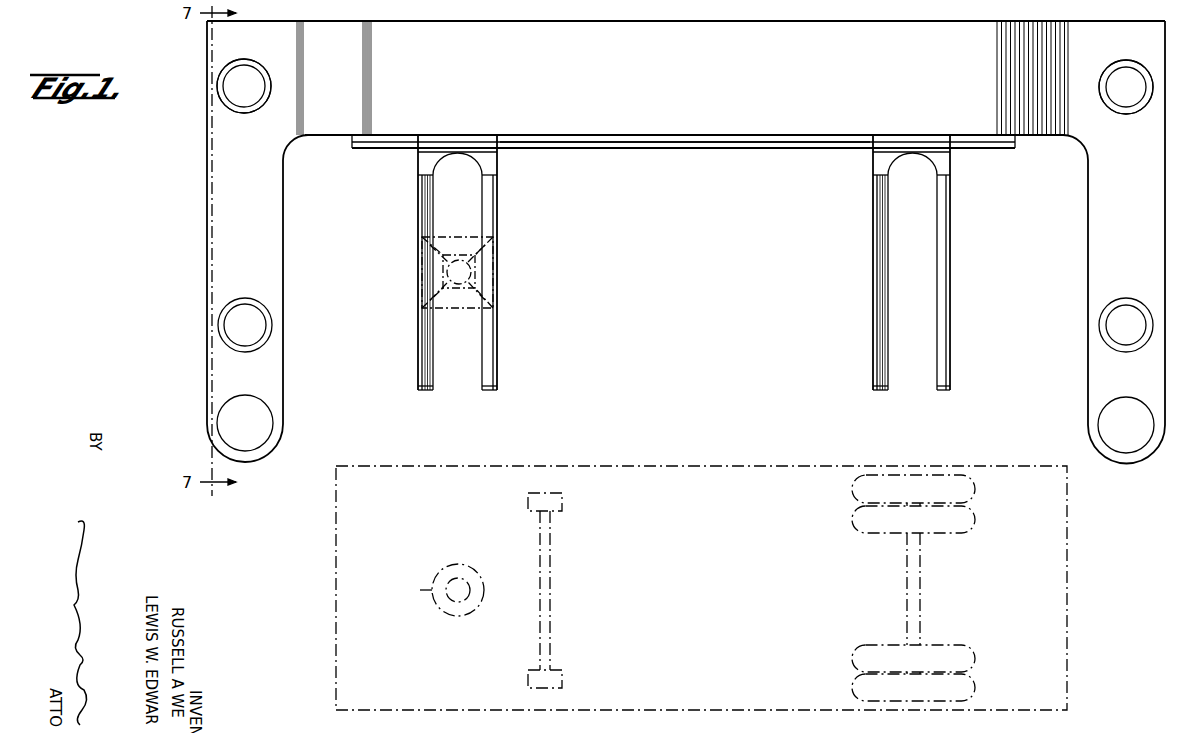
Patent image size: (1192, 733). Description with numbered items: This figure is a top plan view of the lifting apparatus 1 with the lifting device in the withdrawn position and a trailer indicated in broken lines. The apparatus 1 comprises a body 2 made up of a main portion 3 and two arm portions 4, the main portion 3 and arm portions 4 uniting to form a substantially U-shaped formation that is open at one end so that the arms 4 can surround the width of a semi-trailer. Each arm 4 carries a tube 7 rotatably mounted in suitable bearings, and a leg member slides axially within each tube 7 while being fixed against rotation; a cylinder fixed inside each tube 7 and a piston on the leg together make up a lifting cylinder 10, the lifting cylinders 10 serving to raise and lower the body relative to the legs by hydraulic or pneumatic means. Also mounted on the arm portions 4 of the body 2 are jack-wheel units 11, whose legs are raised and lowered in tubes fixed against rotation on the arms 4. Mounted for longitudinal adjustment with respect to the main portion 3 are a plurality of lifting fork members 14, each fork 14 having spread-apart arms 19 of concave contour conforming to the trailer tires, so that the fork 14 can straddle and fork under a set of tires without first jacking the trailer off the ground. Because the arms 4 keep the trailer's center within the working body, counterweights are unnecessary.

The apparatus 1 is at (739, 122).
The body 2 is at (651, 120).
The main portion 3 is at (607, 116).
The arm portions 4 is at (272, 250).
The tube 7 is at (232, 92).
The lifting cylinders 10 is at (236, 110).
The jack-wheel units 11 is at (265, 428).
The lifting fork members 14 is at (488, 254).
The arms 19 is at (492, 397).